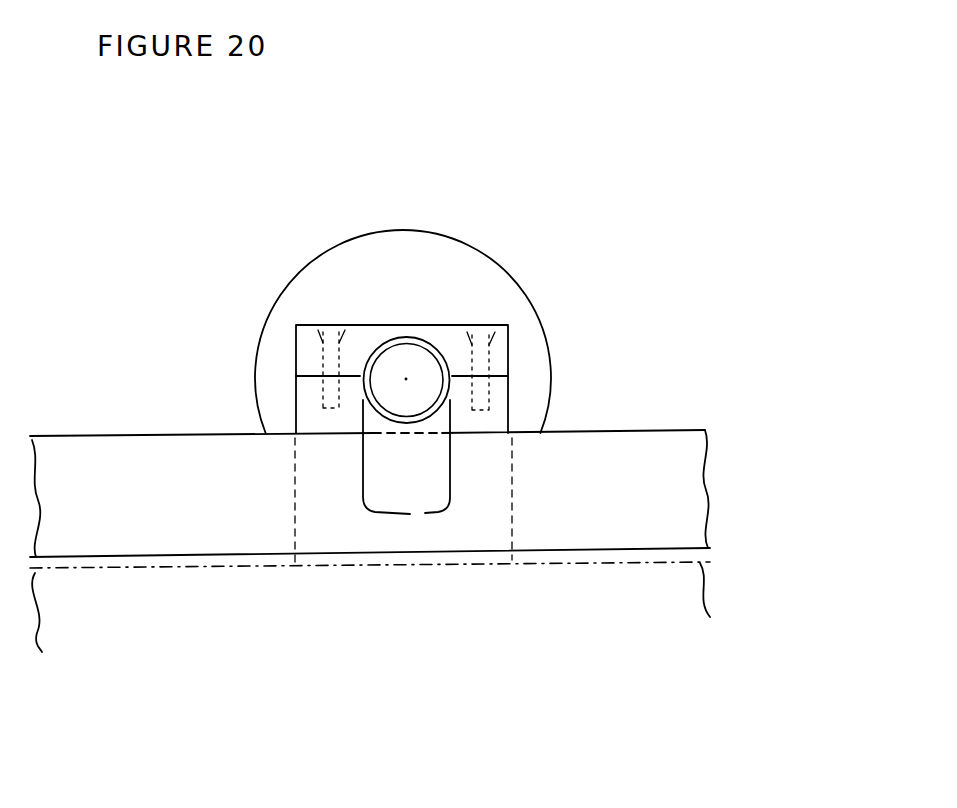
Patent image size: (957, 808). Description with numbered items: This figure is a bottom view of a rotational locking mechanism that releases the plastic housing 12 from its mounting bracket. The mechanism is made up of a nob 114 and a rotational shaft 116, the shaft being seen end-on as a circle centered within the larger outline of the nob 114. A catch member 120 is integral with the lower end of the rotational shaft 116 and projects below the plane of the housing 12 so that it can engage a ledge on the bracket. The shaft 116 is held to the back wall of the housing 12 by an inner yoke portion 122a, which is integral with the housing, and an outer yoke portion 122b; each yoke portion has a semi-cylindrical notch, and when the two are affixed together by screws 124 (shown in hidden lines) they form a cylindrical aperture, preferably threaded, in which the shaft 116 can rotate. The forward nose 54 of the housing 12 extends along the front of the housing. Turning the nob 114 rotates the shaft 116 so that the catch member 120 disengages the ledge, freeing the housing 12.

The housing 12 is at (670, 598).
The forward nose 54 is at (660, 455).
The nob 114 is at (453, 265).
The rotational shaft 116 is at (410, 360).
The catch member 120 is at (418, 498).
The inner yoke portion 122a is at (305, 402).
The outer yoke portion 122b is at (303, 355).
The screws 124 is at (482, 344).